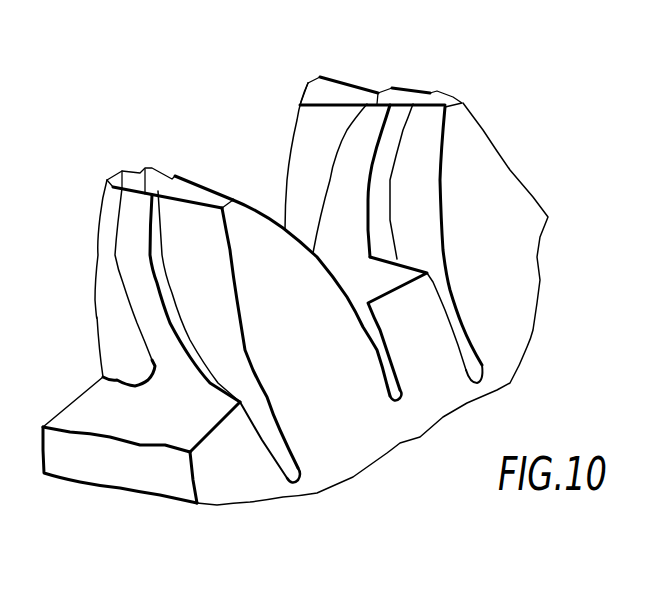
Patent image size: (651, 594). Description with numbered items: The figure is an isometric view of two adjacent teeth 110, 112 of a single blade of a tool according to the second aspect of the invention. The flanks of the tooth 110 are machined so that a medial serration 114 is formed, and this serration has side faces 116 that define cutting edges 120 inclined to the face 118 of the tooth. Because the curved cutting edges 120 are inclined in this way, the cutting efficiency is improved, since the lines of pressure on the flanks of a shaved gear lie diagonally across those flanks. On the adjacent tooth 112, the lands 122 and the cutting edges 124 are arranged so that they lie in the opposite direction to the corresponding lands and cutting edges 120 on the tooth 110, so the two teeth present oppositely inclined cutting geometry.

The tooth 110 is at (343, 412).
The tooth 112 is at (495, 325).
The medial serration 114 is at (133, 213).
The side faces 116 is at (160, 268).
The face of the tooth 118 is at (310, 332).
The cutting edges 120 is at (168, 322).
The lands 122 is at (400, 122).
The cutting edges 124 is at (377, 143).